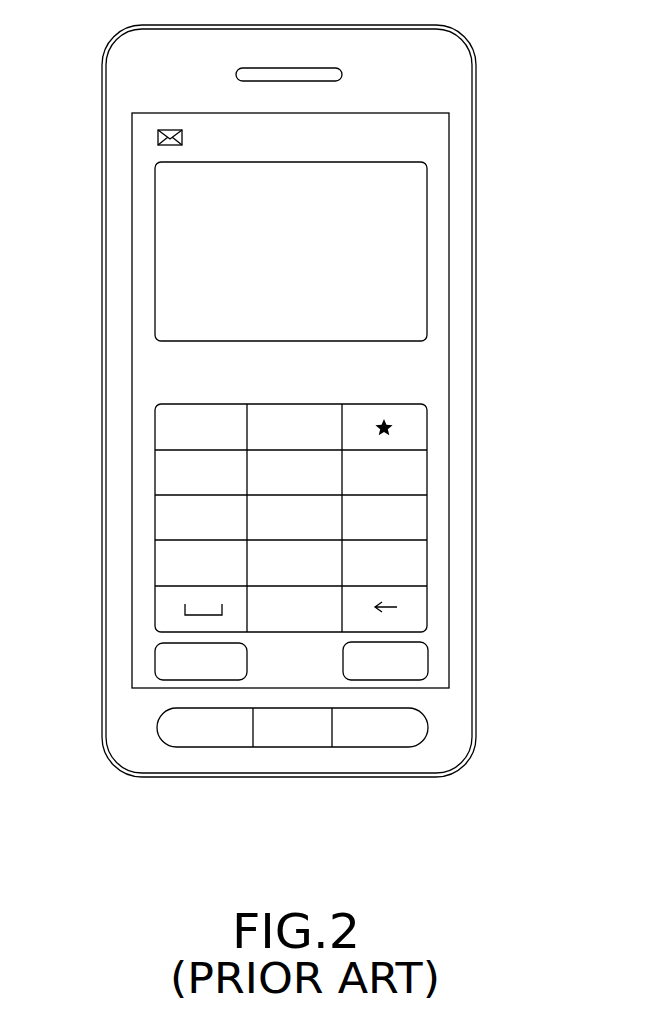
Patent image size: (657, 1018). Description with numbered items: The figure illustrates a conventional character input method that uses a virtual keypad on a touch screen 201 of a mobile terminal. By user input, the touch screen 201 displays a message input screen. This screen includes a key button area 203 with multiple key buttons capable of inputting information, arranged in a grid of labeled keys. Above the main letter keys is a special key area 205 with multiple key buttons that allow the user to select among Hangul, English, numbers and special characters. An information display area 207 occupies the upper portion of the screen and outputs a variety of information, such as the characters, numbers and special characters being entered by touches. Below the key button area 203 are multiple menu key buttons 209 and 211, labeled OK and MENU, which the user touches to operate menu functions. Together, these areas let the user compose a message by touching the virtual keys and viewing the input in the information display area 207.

The touch screen 201 is at (449, 177).
The key button area 203 is at (226, 495).
The special key area 205 is at (150, 633).
The information display area 207 is at (427, 255).
The menu key button 209 is at (428, 658).
The menu key button 211 is at (155, 662).